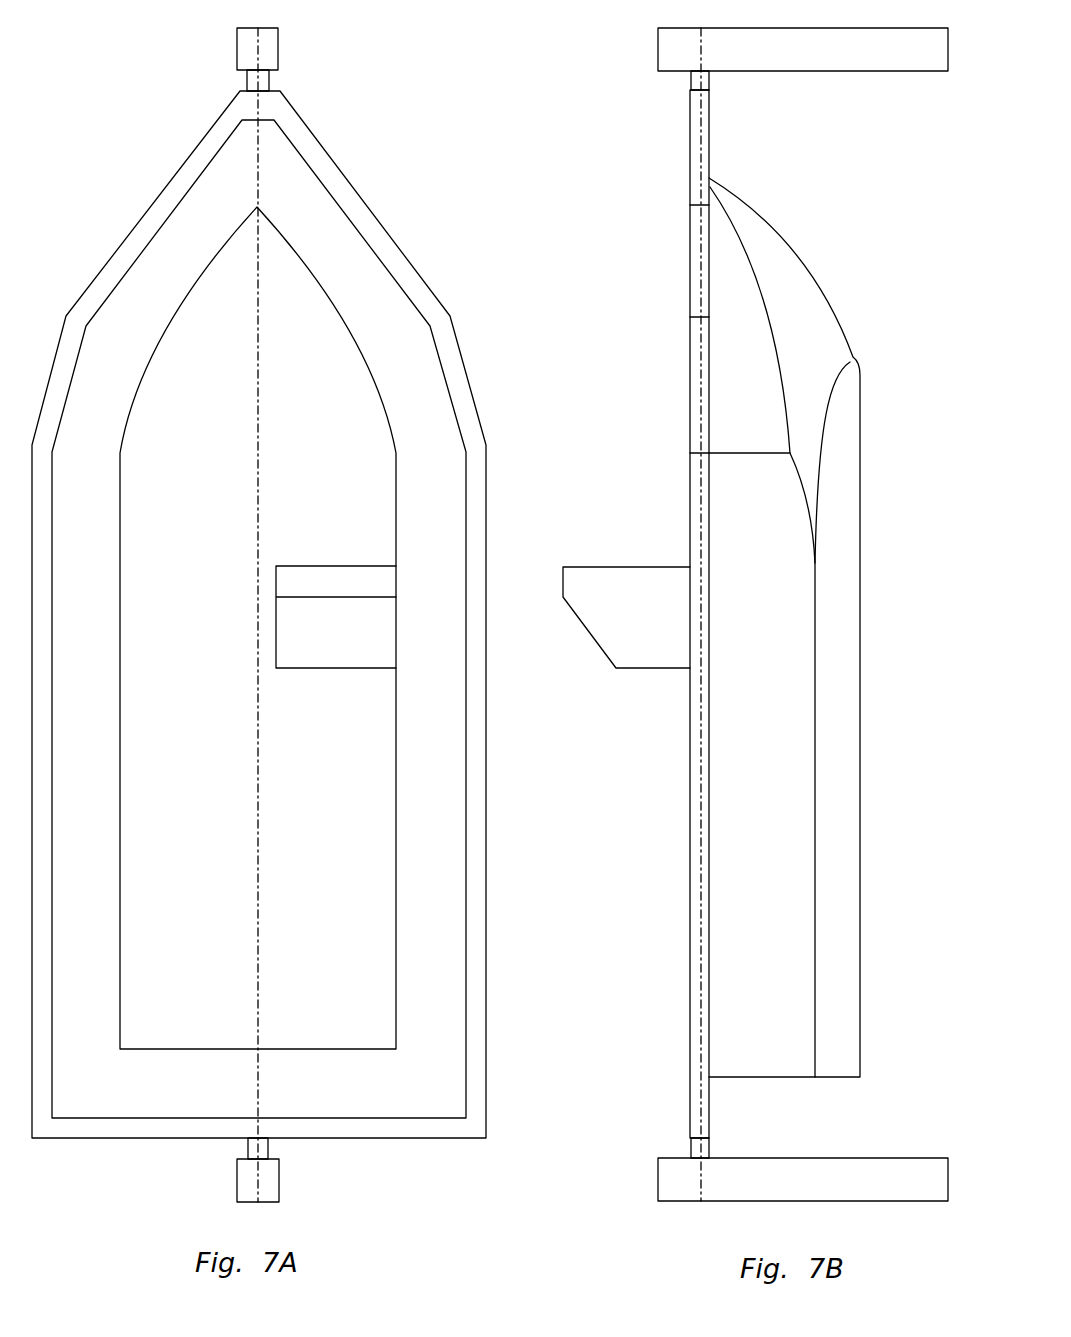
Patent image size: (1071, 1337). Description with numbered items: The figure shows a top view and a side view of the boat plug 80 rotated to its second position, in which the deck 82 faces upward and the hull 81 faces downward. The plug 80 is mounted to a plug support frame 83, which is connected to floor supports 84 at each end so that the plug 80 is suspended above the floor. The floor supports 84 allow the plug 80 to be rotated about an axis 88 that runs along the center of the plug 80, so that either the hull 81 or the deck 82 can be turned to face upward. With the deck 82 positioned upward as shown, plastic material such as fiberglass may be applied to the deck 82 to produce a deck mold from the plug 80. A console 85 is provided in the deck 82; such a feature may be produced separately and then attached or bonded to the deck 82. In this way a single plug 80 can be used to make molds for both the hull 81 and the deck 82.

In FIG. 7A, the plug 80 is at (365, 275).
In FIG. 7B, the plug 80 is at (810, 255).
In FIG. 7B, the hull 81 is at (788, 725).
In FIG. 7A, the deck 82 is at (297, 863).
In FIG. 7A, the plug support frame 83 is at (432, 310).
In FIG. 7B, the plug support frame 83 is at (702, 285).
In FIG. 7A, the floor support 84 is at (267, 48).
In FIG. 7B, the floor support 84 is at (483, 1188).
In FIG. 7A, the console 85 is at (320, 644).
In FIG. 7B, the console 85 is at (642, 625).
In FIG. 7A, the axis 88 is at (258, 105).
In FIG. 7B, the axis 88 is at (700, 117).